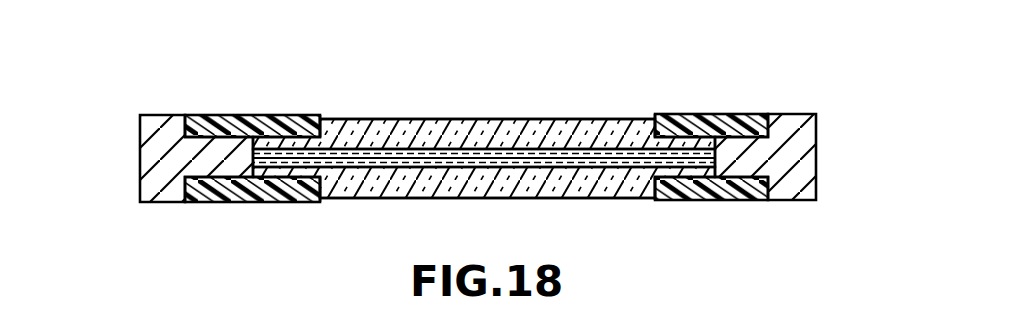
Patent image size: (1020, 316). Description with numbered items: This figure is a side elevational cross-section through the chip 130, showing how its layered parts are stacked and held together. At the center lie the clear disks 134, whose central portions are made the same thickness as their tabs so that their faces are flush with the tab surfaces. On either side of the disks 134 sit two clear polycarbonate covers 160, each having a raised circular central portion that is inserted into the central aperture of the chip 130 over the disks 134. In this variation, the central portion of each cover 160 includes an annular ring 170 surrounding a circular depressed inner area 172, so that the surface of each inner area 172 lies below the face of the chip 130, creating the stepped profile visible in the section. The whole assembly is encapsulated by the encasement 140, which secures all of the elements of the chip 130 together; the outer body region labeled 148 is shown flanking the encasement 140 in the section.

The chip 130 is at (476, 148).
The disks 134 is at (325, 147).
The encasement 140 is at (243, 115).
The housing block 148 is at (140, 163).
The covers 160 is at (487, 118).
The annular rings 170 is at (323, 117).
The inner areas 172 is at (431, 112).